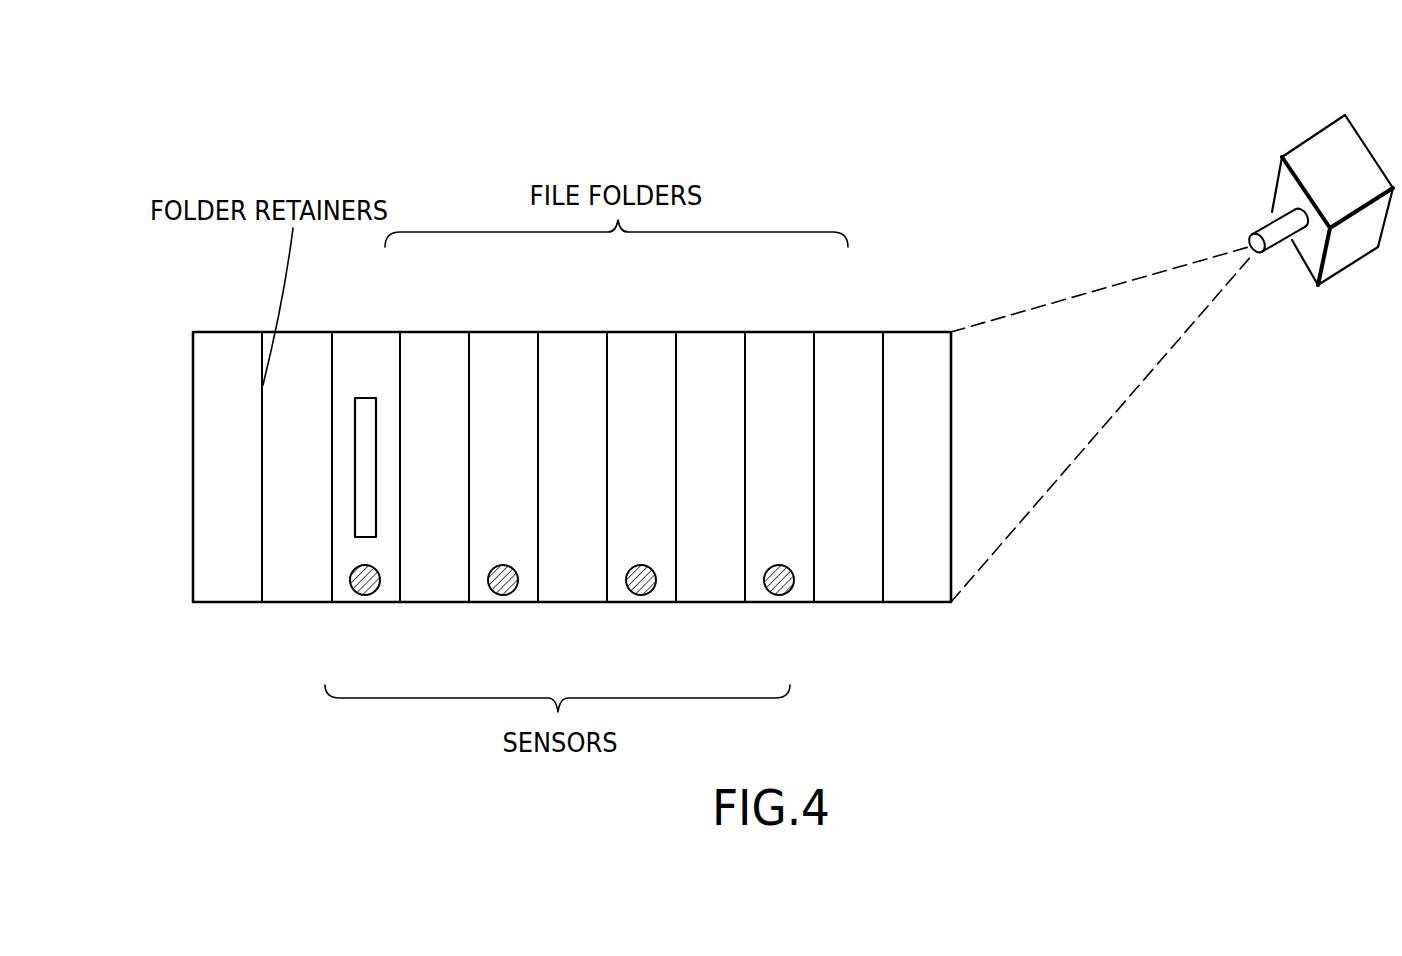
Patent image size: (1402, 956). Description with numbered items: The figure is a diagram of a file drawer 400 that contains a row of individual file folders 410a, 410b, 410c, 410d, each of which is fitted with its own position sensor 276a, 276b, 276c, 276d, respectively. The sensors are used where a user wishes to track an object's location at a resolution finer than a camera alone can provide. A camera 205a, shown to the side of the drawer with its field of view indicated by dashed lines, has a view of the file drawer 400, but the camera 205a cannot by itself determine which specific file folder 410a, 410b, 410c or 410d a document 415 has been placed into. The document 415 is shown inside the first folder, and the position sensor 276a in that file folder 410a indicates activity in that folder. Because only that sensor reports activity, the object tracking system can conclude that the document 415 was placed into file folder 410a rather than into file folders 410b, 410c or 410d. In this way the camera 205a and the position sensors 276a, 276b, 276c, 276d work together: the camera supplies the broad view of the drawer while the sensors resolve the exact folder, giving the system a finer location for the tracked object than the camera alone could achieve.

The file drawer 400 is at (192, 332).
The document 415 is at (362, 398).
The file folder 410a is at (382, 362).
The file folder 410b is at (520, 360).
The file folder 410c is at (658, 360).
The file folder 410d is at (797, 360).
The position sensor 276a is at (357, 595).
The position sensor 276b is at (495, 595).
The position sensor 276c is at (633, 595).
The position sensor 276d is at (771, 595).
The camera 205a is at (1305, 143).